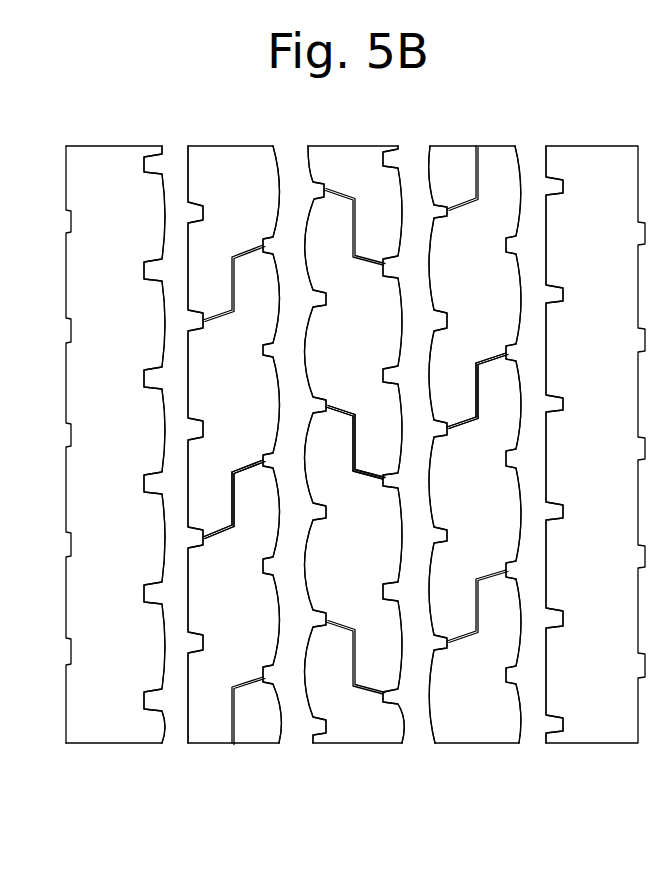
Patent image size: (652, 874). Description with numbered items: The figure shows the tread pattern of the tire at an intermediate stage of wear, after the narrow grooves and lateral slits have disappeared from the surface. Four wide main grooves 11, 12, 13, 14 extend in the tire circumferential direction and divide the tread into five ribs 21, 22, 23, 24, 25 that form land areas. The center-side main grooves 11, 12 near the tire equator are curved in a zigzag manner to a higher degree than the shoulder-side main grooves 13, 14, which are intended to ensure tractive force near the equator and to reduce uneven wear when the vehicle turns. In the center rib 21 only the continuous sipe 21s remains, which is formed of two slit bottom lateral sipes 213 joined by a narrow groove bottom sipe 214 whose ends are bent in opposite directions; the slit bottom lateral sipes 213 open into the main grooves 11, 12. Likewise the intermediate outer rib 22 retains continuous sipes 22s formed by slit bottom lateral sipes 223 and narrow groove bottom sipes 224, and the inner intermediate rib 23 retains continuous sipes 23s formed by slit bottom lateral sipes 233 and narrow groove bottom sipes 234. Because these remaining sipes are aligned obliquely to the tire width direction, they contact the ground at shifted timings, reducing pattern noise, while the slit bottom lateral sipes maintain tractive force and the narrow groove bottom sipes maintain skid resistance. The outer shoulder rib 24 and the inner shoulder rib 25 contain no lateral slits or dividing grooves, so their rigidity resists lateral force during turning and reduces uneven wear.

The center-side outer main groove 11 is at (420, 727).
The center-side inner main groove 12 is at (298, 727).
The shoulder-side main groove 13 is at (533, 727).
The shoulder-side main groove 14 is at (175, 727).
The center rib 21 is at (398, 492).
The intermediate outer rib 22 is at (517, 492).
The inner intermediate rib 23 is at (193, 496).
The outer shoulder rib 24 is at (600, 727).
The inner shoulder rib 25 is at (117, 727).
The continuous sipe 21s is at (356, 432).
The slit bottom lateral sipe 213 is at (345, 410).
The narrow groove bottom sipe 214 is at (355, 445).
The continuous sipe 22s is at (475, 383).
The slit bottom lateral sipe 223 is at (492, 352).
The narrow groove bottom sipe 224 is at (478, 390).
The continuous sipe 23s is at (234, 500).
The slit bottom lateral sipe 233 is at (248, 462).
The narrow groove bottom sipe 234 is at (232, 495).